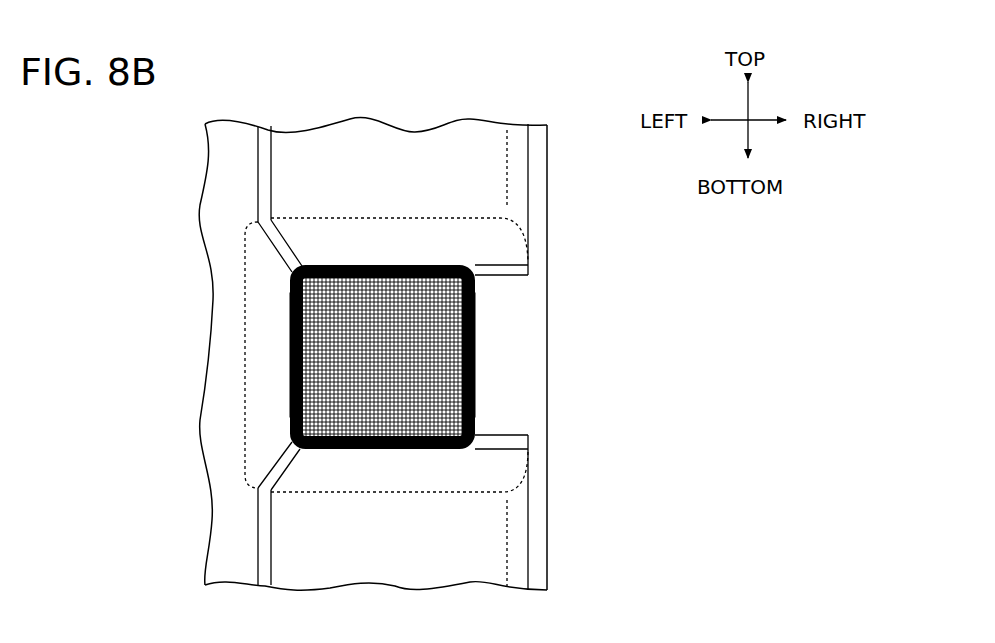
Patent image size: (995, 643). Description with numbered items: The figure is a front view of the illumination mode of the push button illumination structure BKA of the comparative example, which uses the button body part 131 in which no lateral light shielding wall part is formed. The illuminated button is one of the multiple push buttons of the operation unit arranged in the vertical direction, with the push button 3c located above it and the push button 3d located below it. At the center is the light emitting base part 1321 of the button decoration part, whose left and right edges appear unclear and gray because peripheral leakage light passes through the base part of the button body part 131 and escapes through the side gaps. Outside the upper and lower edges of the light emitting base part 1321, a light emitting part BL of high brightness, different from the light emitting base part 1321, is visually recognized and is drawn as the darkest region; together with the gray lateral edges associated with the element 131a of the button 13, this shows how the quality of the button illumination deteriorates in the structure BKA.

The push button 3c is at (490, 172).
The push button 3d is at (490, 552).
The light emitting part BL is at (428, 263).
The electrode portion 131a is at (475, 305).
The button body part 131 is at (489, 355).
The light emitting base part 1321 is at (450, 350).
The element 13 is at (489, 357).
The push button illumination structure BKA is at (489, 366).